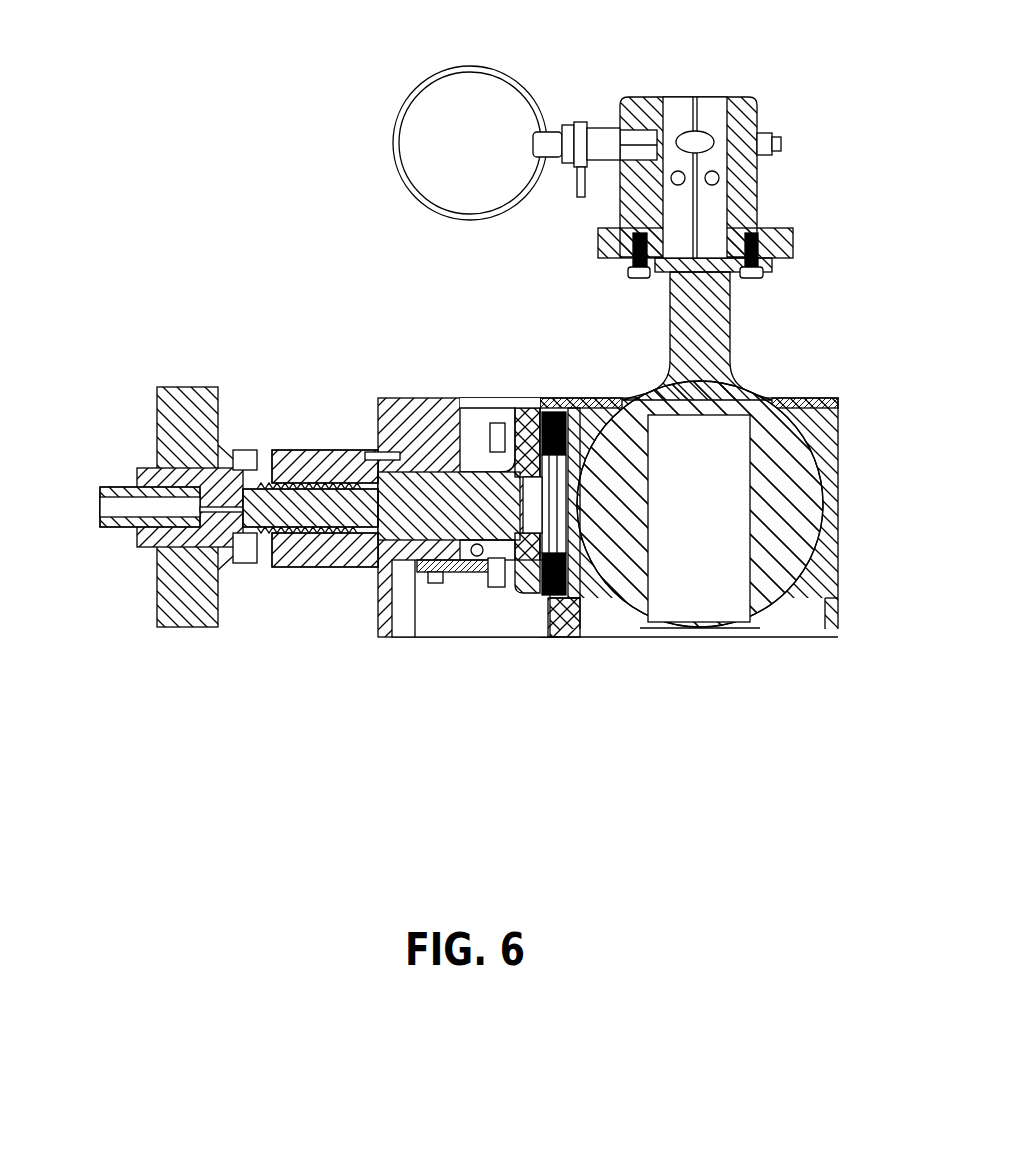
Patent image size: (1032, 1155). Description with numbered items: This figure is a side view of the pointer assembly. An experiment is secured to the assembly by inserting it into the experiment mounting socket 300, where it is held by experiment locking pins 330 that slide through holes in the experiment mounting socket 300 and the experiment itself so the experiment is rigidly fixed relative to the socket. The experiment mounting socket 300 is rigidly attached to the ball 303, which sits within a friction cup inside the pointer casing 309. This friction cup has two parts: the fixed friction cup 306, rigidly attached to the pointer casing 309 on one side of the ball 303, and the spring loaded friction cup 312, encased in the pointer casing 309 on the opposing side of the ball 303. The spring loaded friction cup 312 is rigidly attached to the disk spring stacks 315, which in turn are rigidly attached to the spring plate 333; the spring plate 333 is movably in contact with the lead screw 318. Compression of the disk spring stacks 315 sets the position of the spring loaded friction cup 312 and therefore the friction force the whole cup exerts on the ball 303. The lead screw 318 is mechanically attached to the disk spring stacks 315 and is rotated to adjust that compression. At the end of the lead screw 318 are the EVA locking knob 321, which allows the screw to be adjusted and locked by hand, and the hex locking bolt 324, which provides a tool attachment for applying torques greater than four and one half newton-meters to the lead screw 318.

The experiment mounting socket 300 is at (738, 248).
The ball 303 is at (747, 595).
The fixed friction cup 306 is at (692, 515).
The pointer casing 309 is at (437, 548).
The spring loaded friction cup 312 is at (510, 430).
The disk spring stacks 315 is at (560, 514).
The lead screw 318 is at (376, 451).
The EVA locking knob 321 is at (152, 481).
The hex locking bolt 324 is at (133, 507).
The experiment locking pins 330 is at (598, 130).
The spring plate 333 is at (468, 626).